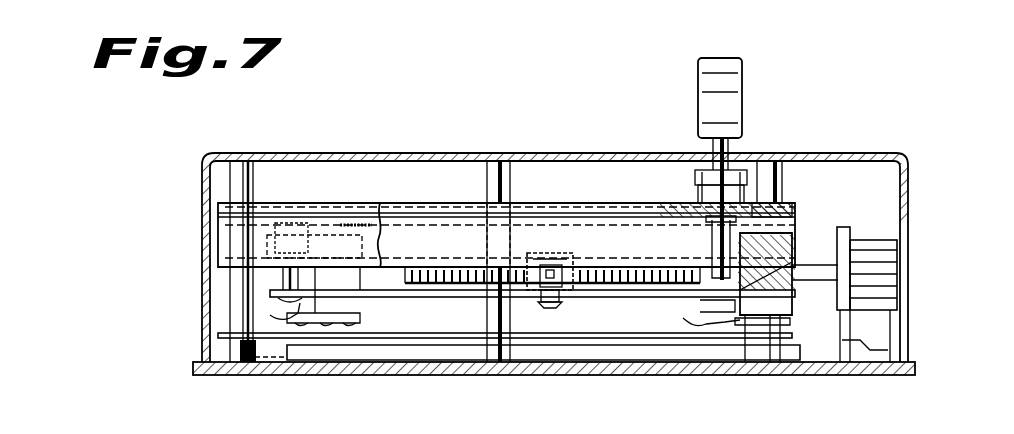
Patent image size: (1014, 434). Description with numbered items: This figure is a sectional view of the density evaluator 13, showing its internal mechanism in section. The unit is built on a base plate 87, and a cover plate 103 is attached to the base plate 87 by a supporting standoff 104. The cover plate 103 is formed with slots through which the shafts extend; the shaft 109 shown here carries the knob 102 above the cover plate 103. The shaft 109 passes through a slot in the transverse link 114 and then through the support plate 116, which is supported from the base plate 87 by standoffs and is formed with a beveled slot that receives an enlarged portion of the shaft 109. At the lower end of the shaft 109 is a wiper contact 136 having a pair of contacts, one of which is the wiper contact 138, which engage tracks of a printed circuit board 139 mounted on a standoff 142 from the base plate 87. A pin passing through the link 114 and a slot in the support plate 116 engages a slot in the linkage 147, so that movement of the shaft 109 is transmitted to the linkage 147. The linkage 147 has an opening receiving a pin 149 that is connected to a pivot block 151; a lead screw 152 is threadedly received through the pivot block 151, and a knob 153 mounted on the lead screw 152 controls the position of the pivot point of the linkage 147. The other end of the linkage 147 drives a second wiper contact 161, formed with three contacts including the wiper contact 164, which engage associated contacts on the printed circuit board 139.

The evaluator 13 is at (483, 142).
The base plate 87 is at (631, 376).
The knob 102 is at (735, 99).
The cover plate 103 is at (573, 153).
The supporting standoff 104 is at (492, 178).
The shaft 109 is at (735, 147).
The transverse link 114 is at (695, 185).
The support plate 116 is at (575, 206).
The wiper contact 136 is at (790, 300).
The wiper contact 138 is at (701, 313).
The printed circuit board 139 is at (426, 334).
The standoff 142 is at (236, 347).
The linkage 147 is at (603, 297).
The pin 149 is at (552, 303).
The pivot block 151 is at (566, 254).
The lead screw 152 is at (809, 264).
The knob 153 is at (858, 288).
The wiper contact 161 is at (362, 318).
The wiper contact 164 is at (313, 272).